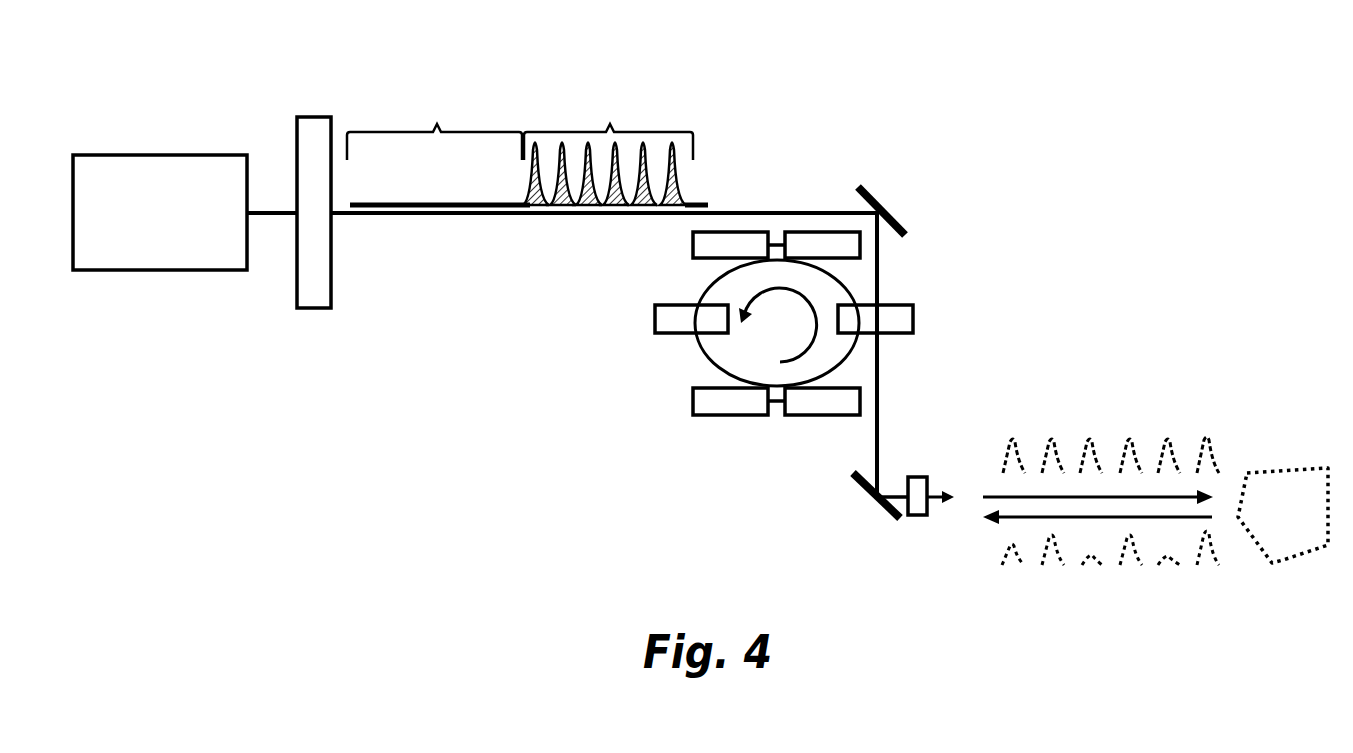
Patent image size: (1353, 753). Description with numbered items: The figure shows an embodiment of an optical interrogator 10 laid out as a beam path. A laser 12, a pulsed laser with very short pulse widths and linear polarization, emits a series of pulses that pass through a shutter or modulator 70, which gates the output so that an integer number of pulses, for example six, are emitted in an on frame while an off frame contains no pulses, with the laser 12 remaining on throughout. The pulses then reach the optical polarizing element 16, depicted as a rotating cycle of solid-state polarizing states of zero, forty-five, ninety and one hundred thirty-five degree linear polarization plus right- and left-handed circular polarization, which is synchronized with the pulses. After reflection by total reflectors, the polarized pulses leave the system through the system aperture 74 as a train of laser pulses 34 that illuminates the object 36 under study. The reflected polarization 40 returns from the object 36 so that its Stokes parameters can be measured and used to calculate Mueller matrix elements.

The optical interrogator 10 is at (1168, 103).
The laser 12 is at (188, 272).
The shutter or modulator 70 is at (305, 116).
The optical polarizing element 16 is at (661, 377).
The system aperture 74 is at (915, 477).
The train of laser pulses 34 is at (992, 493).
The reflected polarization 40 is at (1003, 521).
The object 36 is at (1285, 565).